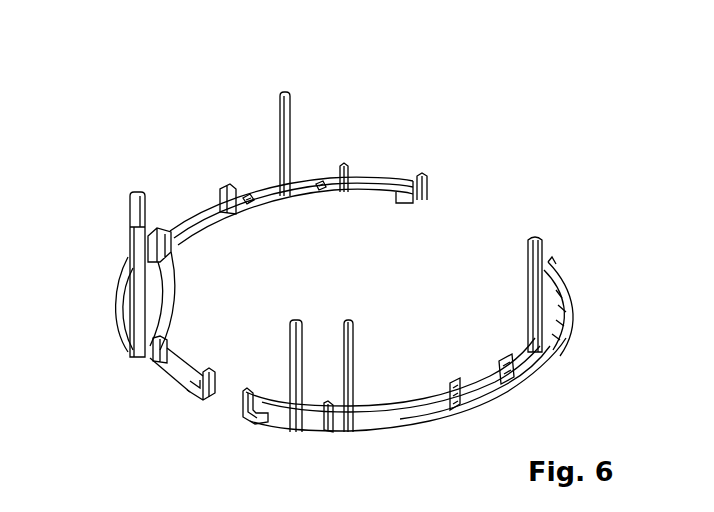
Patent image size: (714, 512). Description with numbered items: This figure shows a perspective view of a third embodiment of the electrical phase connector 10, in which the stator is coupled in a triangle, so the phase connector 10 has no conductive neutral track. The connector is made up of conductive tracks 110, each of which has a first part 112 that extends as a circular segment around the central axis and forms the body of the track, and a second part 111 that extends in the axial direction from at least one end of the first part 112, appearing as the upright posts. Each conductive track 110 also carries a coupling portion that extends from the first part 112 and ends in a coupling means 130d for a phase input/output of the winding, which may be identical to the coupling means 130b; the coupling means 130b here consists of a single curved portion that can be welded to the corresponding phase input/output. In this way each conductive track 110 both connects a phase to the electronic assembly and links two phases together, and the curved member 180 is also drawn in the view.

The phase connector 10 is at (559, 118).
The conductive track 110 is at (286, 201).
The second part 111 is at (282, 94).
The first part 112 is at (257, 183).
The curved retaining member 180 is at (300, 178).
The coupling means 130b is at (218, 188).
The coupling means 130d is at (347, 173).